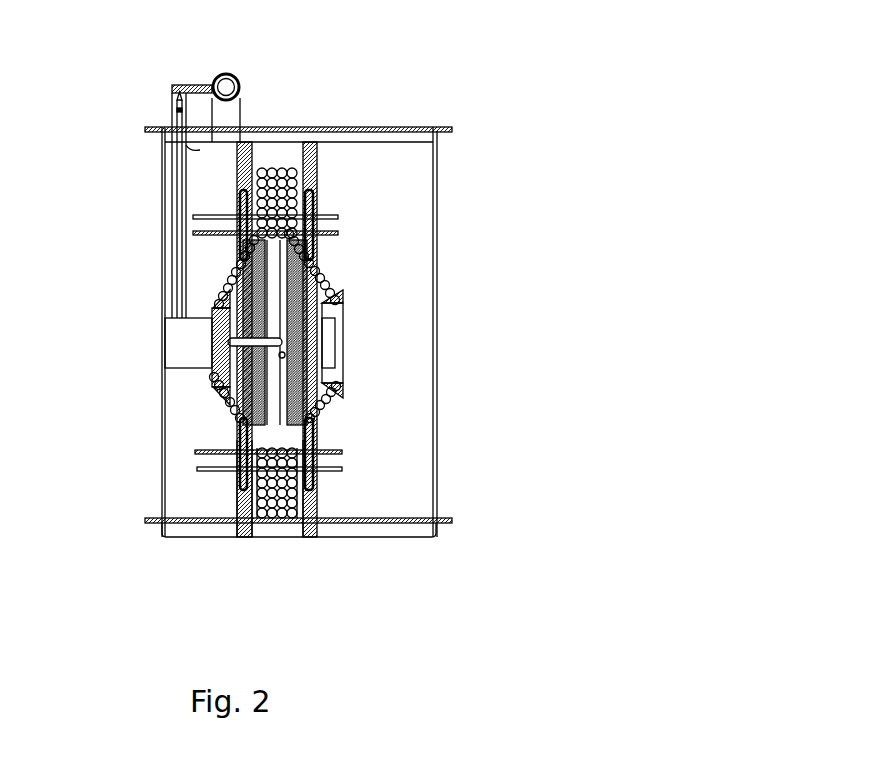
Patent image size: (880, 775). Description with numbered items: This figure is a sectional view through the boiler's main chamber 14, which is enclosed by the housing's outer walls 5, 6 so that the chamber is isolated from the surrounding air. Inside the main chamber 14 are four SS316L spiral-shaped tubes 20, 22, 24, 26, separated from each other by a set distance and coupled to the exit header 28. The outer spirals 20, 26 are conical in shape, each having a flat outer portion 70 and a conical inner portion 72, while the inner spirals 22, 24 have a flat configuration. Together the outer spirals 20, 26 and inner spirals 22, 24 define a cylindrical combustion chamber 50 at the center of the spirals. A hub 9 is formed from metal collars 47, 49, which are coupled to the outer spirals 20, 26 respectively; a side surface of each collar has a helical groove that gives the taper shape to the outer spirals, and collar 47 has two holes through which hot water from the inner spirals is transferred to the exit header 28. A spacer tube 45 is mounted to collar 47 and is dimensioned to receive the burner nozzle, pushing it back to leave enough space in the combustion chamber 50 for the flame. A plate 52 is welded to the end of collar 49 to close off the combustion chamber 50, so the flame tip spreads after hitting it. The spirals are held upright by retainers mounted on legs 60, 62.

The outer wall 5 is at (160, 430).
The outer wall 6 is at (437, 332).
The hub 9 is at (220, 312).
The main chamber 14 is at (423, 165).
The spiral-shaped tube 20 is at (252, 530).
The spiral-shaped tube 22 is at (267, 530).
The spiral-shaped tube 24 is at (277, 530).
The spiral-shaped tube 26 is at (297, 530).
The header 28 is at (240, 110).
The spacer tube 45 is at (177, 362).
The metal collar 47 is at (213, 373).
The metal collar 49 is at (342, 382).
The combustion chamber 50 is at (332, 280).
The plate 52 is at (345, 333).
The leg 60 is at (257, 157).
The leg 62 is at (317, 167).
The flat outer portion 70 is at (247, 500).
The conical inner portion 72 is at (238, 400).